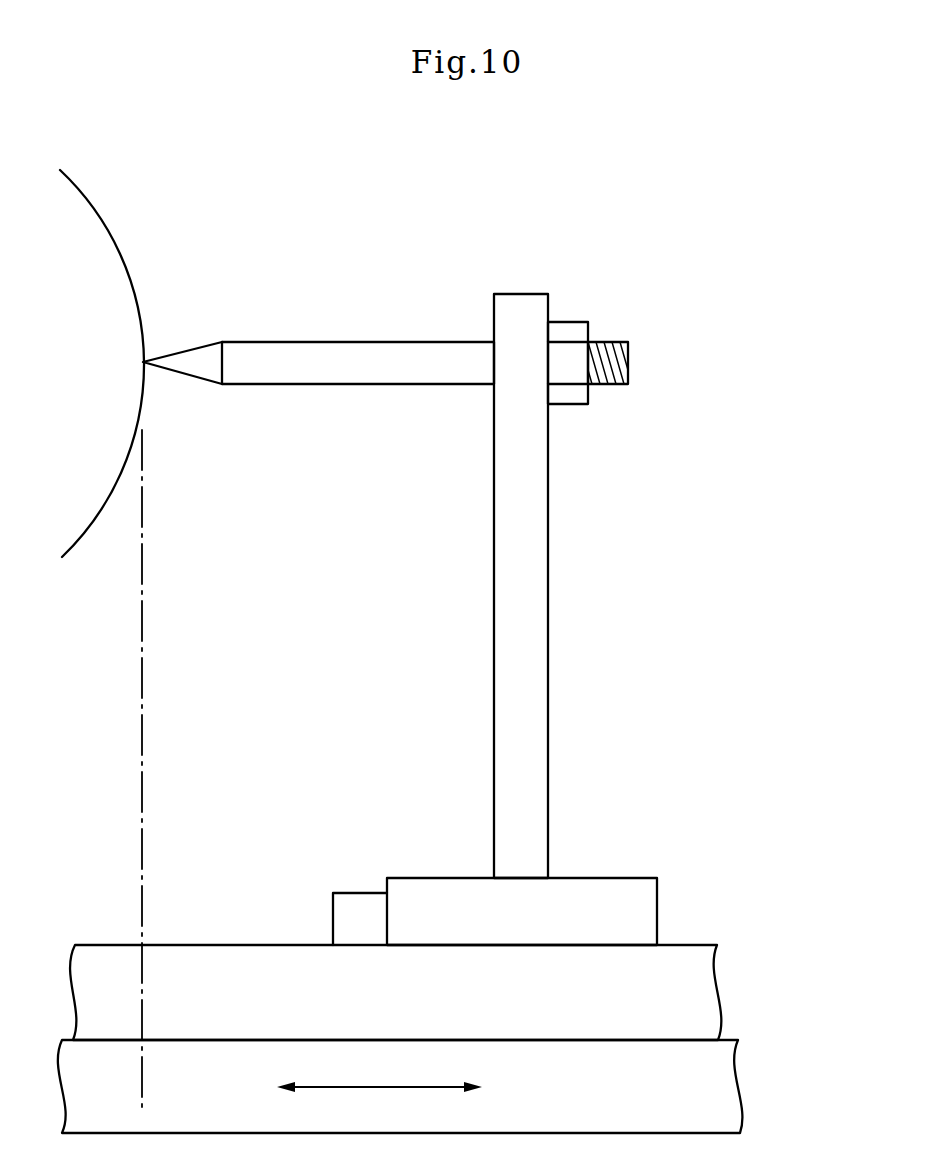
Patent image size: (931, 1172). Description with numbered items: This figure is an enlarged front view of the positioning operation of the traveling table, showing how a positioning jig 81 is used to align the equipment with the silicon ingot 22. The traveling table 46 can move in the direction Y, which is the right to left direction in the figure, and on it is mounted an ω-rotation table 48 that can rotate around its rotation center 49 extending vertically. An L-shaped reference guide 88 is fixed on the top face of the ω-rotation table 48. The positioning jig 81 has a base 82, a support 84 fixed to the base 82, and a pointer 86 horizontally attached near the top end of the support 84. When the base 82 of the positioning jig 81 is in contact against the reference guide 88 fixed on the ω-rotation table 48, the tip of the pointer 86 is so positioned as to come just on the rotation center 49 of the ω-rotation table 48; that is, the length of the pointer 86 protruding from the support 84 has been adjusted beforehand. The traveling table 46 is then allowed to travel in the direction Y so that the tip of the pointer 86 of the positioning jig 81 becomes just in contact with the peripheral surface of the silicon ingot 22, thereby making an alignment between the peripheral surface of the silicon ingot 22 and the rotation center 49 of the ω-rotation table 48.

The silicon ingot 22 is at (103, 218).
The pointer 86 is at (284, 339).
The positioning jig 81 is at (487, 582).
The support 84 is at (550, 637).
The base 82 is at (607, 878).
The reference guide 88 is at (332, 913).
The ω-rotation table 48 is at (713, 980).
The traveling table 46 is at (733, 1078).
The rotation center 49 is at (142, 792).